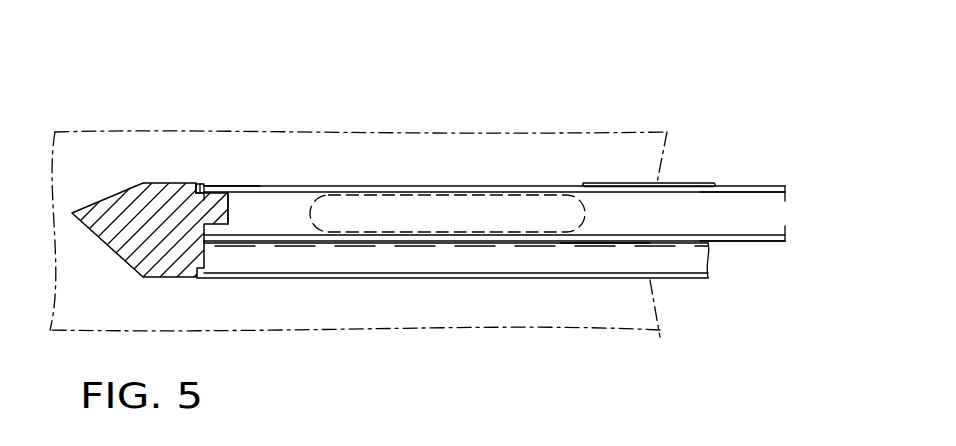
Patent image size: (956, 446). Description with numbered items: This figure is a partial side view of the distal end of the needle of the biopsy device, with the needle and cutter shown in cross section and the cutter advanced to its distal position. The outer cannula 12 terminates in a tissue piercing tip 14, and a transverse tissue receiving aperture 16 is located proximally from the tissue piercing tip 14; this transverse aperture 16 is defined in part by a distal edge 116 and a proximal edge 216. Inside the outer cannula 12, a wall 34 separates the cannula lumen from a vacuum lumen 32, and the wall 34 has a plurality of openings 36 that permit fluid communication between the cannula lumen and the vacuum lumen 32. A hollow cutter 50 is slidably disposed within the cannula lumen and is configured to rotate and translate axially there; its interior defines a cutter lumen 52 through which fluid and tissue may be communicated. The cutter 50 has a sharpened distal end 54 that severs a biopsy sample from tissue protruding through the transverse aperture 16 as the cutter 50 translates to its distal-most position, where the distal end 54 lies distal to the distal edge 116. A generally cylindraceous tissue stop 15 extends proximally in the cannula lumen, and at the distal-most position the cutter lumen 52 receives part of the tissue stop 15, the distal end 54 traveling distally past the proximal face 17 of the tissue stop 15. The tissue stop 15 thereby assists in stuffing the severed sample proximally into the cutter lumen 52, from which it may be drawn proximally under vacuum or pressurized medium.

The tissue piercing tip 14 is at (96, 203).
The sharpened distal end 54 is at (197, 185).
The tissue stop 15 is at (218, 196).
The distal edge 116 is at (243, 185).
The proximal face 17 is at (230, 218).
The transverse tissue receiving aperture 16 is at (481, 144).
The proximal edge 216 is at (583, 183).
The outer cannula 12 is at (692, 183).
The cutter lumen 52 is at (763, 204).
The cutter 50 is at (735, 242).
The vacuum lumen 32 is at (663, 268).
The wall 34 is at (603, 245).
The openings 36 is at (373, 244).